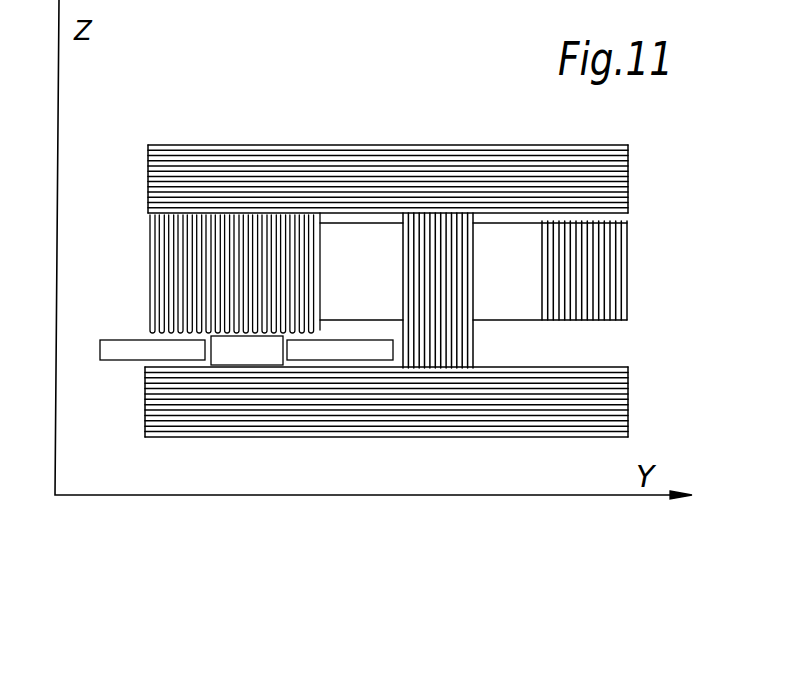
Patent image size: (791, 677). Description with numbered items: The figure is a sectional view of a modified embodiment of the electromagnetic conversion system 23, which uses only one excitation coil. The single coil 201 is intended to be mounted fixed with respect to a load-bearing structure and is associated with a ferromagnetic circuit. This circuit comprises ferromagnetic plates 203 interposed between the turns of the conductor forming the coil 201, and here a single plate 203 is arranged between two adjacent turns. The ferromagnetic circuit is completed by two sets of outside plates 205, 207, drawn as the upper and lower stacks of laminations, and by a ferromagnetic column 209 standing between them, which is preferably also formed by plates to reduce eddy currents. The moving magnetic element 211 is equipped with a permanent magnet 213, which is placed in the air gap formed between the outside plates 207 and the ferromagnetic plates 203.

The electromagnetic conversion system 23 is at (261, 138).
The coil 201 is at (167, 282).
The ferromagnetic plates 203 is at (160, 322).
The outside plates 205 is at (402, 158).
The outside plates 207 is at (384, 421).
The ferromagnetic column 209 is at (462, 290).
The moving magnetic element 211 is at (122, 352).
The permanent magnet 213 is at (225, 352).